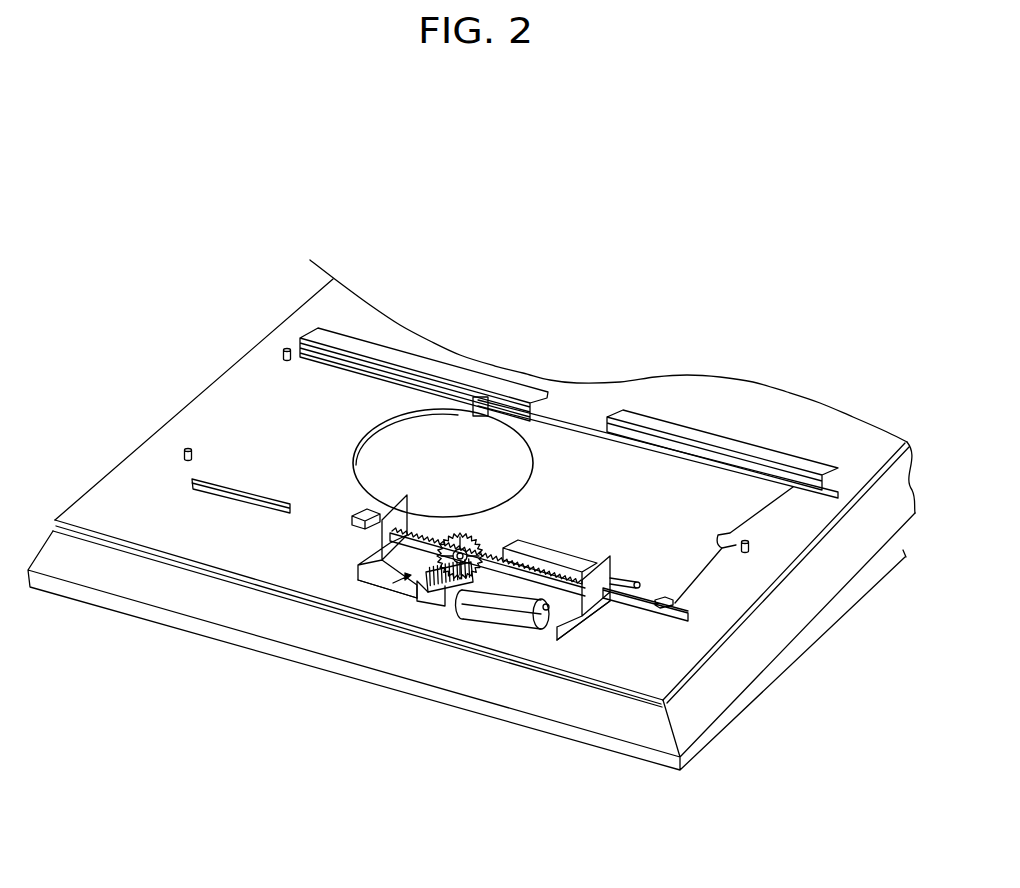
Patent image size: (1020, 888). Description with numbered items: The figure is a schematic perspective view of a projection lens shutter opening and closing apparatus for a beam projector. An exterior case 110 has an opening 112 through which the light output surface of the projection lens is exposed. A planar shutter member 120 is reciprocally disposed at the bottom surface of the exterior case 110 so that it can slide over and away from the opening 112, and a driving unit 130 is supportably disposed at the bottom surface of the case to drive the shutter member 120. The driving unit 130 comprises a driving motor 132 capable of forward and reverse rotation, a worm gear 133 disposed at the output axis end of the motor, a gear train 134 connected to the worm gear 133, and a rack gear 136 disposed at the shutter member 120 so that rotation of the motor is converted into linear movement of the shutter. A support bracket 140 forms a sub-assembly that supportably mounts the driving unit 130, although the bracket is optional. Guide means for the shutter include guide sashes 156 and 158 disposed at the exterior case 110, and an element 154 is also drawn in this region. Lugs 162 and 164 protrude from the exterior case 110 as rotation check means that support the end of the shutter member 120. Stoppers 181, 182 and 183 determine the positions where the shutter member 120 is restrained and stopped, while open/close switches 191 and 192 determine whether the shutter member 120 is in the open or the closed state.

The exterior case 110 is at (647, 757).
The opening 112 is at (422, 437).
The shutter member 120 is at (743, 494).
The driving unit 130 is at (304, 586).
The driving motor 132 is at (497, 608).
The worm gear 133 is at (437, 594).
The gear train 134 is at (460, 541).
The rack gear 136 is at (565, 574).
The support bracket 140 is at (590, 600).
The rack 154 is at (487, 541).
The guide sash 156 is at (467, 368).
The guide sash 158 is at (680, 440).
The lug 162 is at (257, 496).
The lug 164 is at (658, 597).
The stopper 181 is at (752, 548).
The stopper 182 is at (183, 455).
The stopper 183 is at (283, 352).
The open/close switch 191 is at (358, 565).
The open/close switch 192 is at (512, 556).